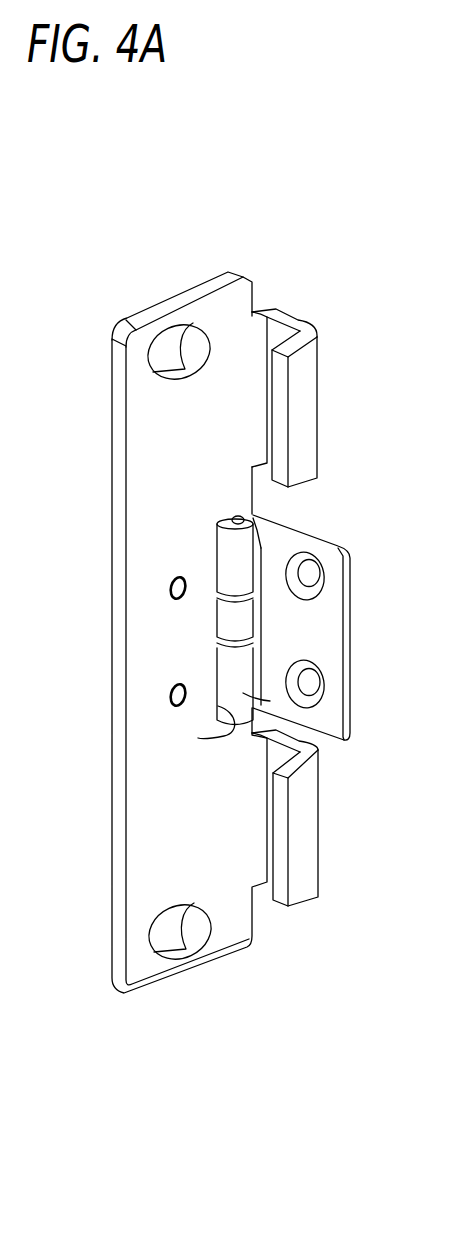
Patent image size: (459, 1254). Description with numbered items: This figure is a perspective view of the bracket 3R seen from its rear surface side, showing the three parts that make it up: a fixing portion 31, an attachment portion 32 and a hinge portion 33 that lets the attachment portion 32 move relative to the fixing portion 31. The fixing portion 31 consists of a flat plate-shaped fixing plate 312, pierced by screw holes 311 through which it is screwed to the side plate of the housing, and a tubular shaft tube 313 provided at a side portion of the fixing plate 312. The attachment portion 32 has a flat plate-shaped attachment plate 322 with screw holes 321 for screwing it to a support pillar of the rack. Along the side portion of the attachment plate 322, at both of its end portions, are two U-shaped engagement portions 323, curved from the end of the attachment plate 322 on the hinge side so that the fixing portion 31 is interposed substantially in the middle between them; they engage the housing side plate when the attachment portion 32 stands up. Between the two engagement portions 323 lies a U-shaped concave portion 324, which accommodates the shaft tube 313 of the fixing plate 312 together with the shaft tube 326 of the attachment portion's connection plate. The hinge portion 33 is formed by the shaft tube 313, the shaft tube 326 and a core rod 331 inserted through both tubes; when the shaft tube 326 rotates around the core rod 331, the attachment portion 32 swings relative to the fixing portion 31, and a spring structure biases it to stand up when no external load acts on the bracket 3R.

The bracket 3R is at (301, 197).
The fixing portion 31 is at (350, 647).
The screw holes 311 is at (312, 577).
The fixing plate 312 is at (333, 619).
The shaft tube 313 is at (243, 538).
The attachment portion 32 is at (120, 491).
The screw holes 321 is at (174, 346).
The attachment plate 322 is at (159, 447).
The engagement portions 323 is at (297, 322).
The concave portion 324 is at (233, 715).
The shaft tube 326 is at (232, 575).
The hinge portion 33 is at (228, 622).
The core rod 331 is at (250, 523).